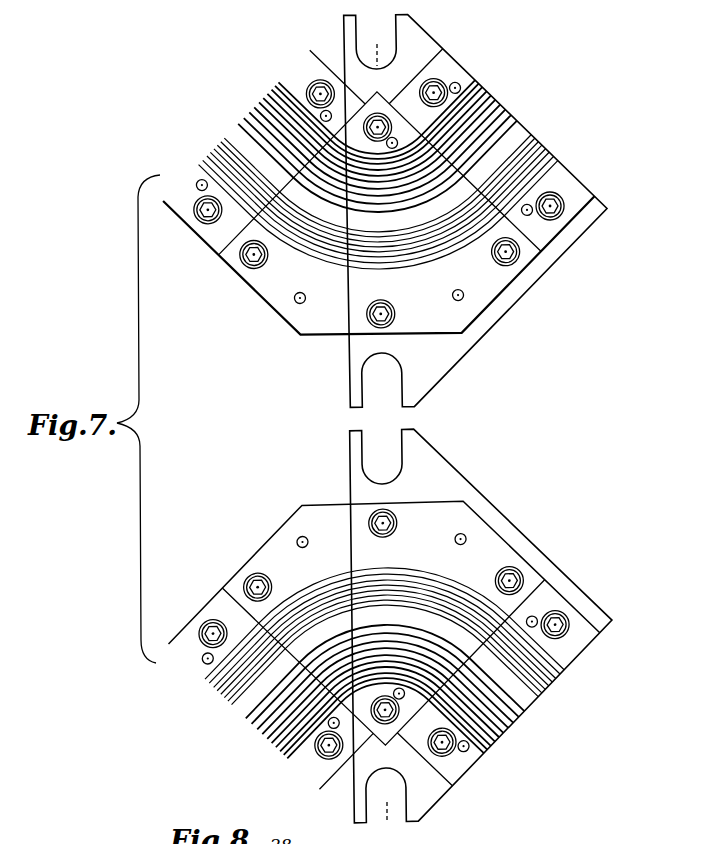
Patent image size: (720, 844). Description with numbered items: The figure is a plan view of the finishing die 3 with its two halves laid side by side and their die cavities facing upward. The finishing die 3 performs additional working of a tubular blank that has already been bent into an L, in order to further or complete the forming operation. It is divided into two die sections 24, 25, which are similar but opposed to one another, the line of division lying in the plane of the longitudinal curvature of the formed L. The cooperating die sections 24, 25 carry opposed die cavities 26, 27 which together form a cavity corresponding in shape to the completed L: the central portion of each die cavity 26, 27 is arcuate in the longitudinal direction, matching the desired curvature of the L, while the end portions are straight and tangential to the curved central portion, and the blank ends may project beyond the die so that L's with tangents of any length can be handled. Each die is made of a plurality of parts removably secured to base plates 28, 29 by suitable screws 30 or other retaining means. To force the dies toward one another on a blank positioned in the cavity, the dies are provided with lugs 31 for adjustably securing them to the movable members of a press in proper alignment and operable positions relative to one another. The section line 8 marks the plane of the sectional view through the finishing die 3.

The finishing die 3 is at (439, 446).
The section line 8- 8 is at (382, 432).
The die section 24 is at (580, 193).
The die section 25 is at (520, 535).
The die cavity 26 is at (519, 134).
The die cavity 27 is at (512, 713).
The base plate 28 is at (500, 305).
The base plate 29 is at (482, 500).
The screws 30 is at (556, 217).
The lugs 31 is at (424, 44).